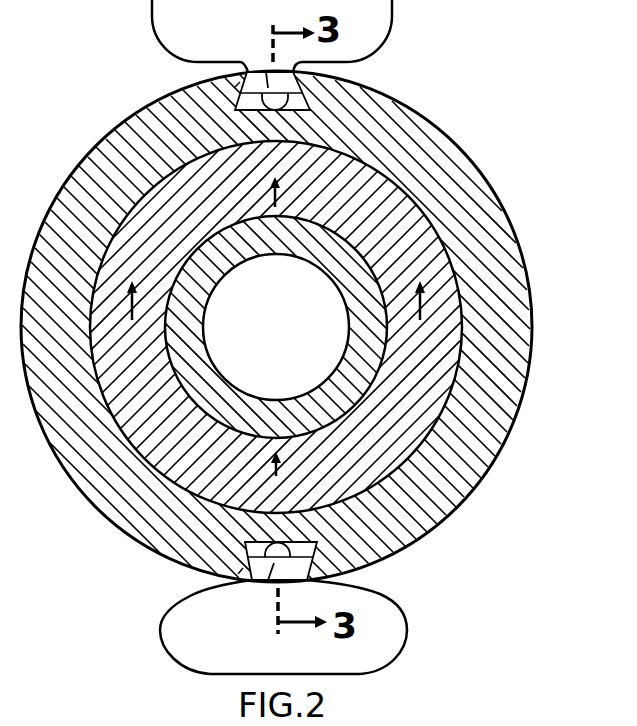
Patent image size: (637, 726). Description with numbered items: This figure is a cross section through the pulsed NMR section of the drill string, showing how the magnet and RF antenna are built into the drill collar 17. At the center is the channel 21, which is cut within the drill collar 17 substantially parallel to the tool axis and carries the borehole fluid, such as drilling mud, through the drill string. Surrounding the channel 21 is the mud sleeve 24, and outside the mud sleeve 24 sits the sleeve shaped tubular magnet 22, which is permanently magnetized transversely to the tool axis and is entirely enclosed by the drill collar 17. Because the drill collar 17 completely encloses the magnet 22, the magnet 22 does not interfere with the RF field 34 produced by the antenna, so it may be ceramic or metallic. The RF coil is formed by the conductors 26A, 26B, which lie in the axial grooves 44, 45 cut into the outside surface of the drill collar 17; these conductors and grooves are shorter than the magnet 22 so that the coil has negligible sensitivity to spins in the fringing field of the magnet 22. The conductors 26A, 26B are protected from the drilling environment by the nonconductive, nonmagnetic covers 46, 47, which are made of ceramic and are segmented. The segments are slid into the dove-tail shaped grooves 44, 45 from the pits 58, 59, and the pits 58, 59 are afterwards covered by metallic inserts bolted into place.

The drill collar 17 is at (440, 150).
The channel 21 is at (284, 371).
The tubular magnet 22 is at (432, 228).
The mud sleeve 24 is at (345, 385).
The RF conductor 26A is at (275, 101).
The RF conductor 26B is at (286, 546).
The RF field 34 is at (395, 27).
The axial groove 44 is at (322, 563).
The axial groove 45 is at (312, 80).
The nonmagnetic cover 46 is at (268, 580).
The nonmagnetic cover 47 is at (266, 72).
The pit 58 is at (243, 568).
The pit 59 is at (234, 88).